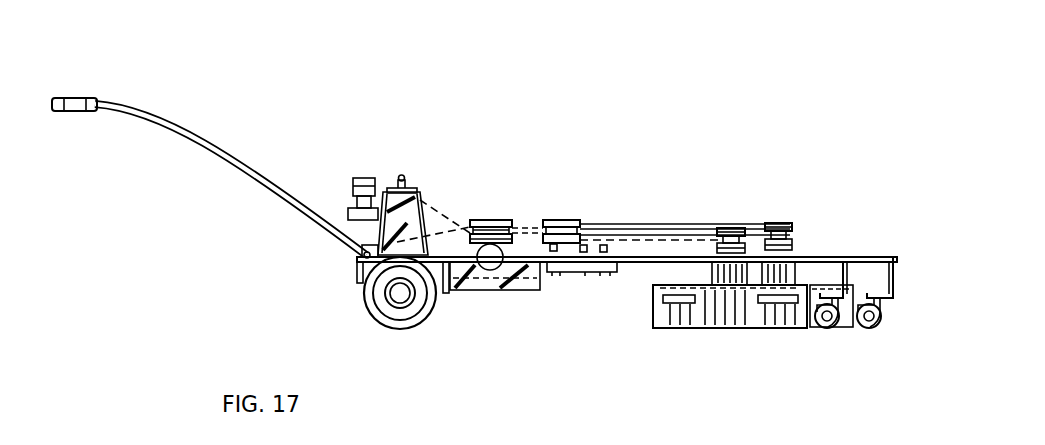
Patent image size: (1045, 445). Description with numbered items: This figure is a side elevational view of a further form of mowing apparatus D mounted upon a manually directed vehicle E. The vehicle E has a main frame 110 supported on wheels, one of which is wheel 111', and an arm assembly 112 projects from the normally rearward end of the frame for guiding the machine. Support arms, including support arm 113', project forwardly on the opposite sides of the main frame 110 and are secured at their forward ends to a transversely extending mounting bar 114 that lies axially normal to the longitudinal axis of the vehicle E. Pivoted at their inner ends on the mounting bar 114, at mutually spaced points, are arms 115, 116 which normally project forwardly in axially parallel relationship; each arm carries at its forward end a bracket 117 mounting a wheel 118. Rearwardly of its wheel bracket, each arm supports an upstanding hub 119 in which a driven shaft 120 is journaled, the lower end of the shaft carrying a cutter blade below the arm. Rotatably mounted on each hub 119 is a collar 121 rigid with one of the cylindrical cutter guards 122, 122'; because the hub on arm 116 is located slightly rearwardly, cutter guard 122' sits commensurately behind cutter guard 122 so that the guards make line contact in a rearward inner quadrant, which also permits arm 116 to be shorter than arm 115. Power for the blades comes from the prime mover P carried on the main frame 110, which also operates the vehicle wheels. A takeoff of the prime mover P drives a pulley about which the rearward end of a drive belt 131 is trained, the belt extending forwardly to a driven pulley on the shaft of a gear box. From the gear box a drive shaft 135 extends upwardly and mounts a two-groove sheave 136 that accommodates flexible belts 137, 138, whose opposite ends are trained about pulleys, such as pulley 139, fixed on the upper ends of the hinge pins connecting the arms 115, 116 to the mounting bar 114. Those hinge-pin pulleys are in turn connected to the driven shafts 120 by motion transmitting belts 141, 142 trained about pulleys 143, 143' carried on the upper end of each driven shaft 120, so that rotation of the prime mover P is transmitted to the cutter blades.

The main frame 110 is at (360, 277).
The wheel 111' is at (368, 301).
The arm assembly 112 is at (122, 102).
The support arm 113' is at (500, 315).
The mounting bar 114 is at (537, 288).
The arm 115 is at (880, 258).
The arm 116 is at (832, 258).
The bracket 117 is at (852, 258).
The wheel 118 is at (873, 330).
The hub 119 is at (745, 240).
The driven shaft 120 is at (717, 233).
The collar 121 is at (715, 283).
The cutter guard 122 is at (753, 348).
The cutter guard 122' is at (676, 339).
The drive belt 131 is at (425, 203).
The drive shaft 135 is at (490, 218).
The two-groove sheave 136 is at (508, 228).
The flexible belt 137 is at (510, 240).
The flexible belt 138 is at (505, 287).
The pulley 139 is at (565, 220).
The motion transmitting belt 141 is at (605, 243).
The motion transmitting belt 142 is at (578, 232).
The pulley 143 is at (766, 169).
The pulley 143' is at (821, 171).
The manually directed vehicle E is at (157, 95).
The mowing apparatus D is at (447, 110).
The prime mover P is at (387, 190).